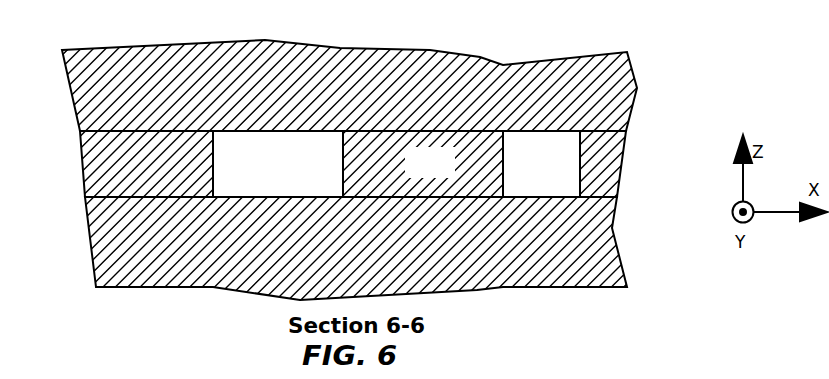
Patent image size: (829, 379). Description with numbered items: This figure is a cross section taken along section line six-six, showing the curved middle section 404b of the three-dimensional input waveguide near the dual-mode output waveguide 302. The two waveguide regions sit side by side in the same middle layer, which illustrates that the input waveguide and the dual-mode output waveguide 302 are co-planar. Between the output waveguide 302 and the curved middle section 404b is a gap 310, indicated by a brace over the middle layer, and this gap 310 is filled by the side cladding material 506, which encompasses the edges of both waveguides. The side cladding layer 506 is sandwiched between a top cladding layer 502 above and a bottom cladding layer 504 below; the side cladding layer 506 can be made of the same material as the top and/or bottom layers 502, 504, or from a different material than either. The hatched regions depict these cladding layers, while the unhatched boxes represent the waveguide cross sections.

The top cladding layer 502 is at (625, 90).
The bottom cladding layer 504 is at (615, 272).
The side cladding layer 506 is at (448, 174).
The dual-mode output waveguide 302 is at (296, 174).
The curved middle section 404b is at (566, 174).
The gap 310 is at (503, 121).